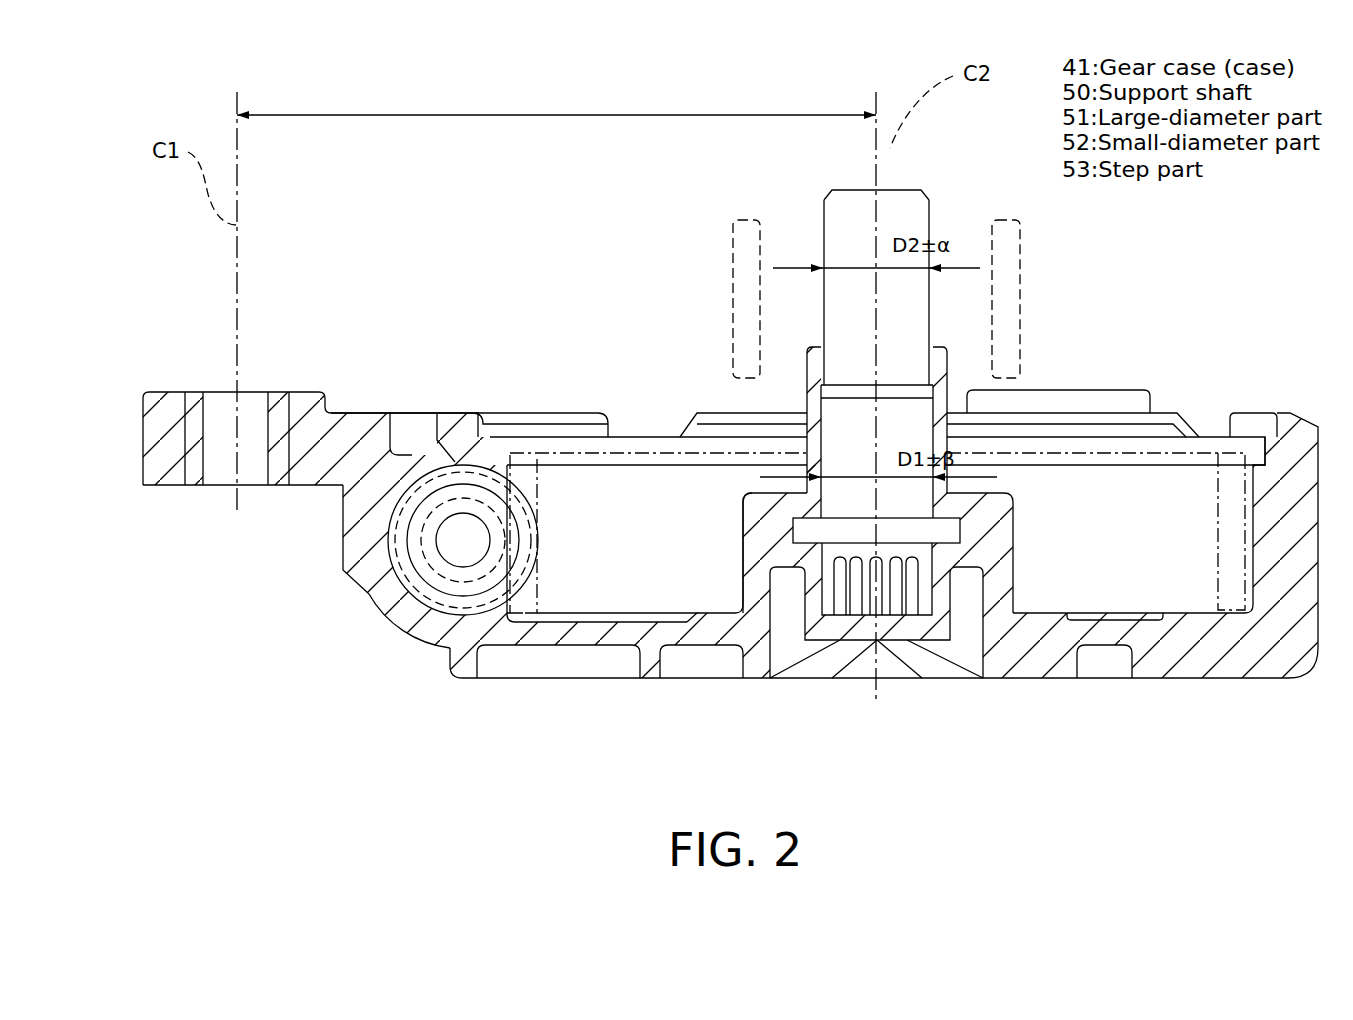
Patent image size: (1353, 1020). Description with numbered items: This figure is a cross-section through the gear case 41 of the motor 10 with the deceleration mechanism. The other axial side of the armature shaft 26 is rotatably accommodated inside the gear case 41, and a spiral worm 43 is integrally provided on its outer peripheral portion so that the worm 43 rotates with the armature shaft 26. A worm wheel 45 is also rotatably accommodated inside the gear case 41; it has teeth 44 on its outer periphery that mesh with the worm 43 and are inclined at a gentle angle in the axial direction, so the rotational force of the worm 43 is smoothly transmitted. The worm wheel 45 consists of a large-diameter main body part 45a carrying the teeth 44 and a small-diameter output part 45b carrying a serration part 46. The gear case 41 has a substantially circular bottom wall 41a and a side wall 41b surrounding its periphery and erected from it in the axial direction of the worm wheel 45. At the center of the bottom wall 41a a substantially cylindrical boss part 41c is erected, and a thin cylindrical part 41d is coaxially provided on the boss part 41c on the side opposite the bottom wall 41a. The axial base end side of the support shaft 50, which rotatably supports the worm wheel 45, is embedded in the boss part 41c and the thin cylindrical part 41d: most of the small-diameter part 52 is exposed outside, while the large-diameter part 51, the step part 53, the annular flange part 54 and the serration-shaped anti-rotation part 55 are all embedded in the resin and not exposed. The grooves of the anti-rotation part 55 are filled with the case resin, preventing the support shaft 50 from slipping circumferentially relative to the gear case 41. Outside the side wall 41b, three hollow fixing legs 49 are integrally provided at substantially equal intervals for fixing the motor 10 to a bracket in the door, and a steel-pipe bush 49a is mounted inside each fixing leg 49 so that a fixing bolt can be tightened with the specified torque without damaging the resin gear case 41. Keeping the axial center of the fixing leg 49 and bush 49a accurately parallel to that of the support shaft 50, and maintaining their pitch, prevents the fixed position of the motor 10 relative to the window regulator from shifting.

The motor with deceleration mechanism 10 is at (1130, 332).
The armature shaft 26 is at (447, 522).
The gear case 41 is at (380, 613).
The bottom wall 41a is at (615, 635).
The side wall 41b is at (1257, 537).
The boss part 41c is at (985, 537).
The thin cylindrical part 41d is at (812, 368).
The worm 43 is at (446, 602).
The teeth 44 is at (1277, 606).
The worm wheel 45 is at (653, 453).
The large-diameter main body part 45a is at (1107, 545).
The small-diameter output part 45b is at (792, 238).
The serration part 46 is at (745, 258).
The fixing leg 49 is at (163, 422).
The bush 49a is at (274, 397).
The support shaft 50 is at (935, 203).
The large-diameter part 51 is at (864, 450).
The small-diameter part 52 is at (864, 337).
The step part 53 is at (895, 385).
The flange part 54 is at (814, 530).
The anti-rotation part 55 is at (905, 588).